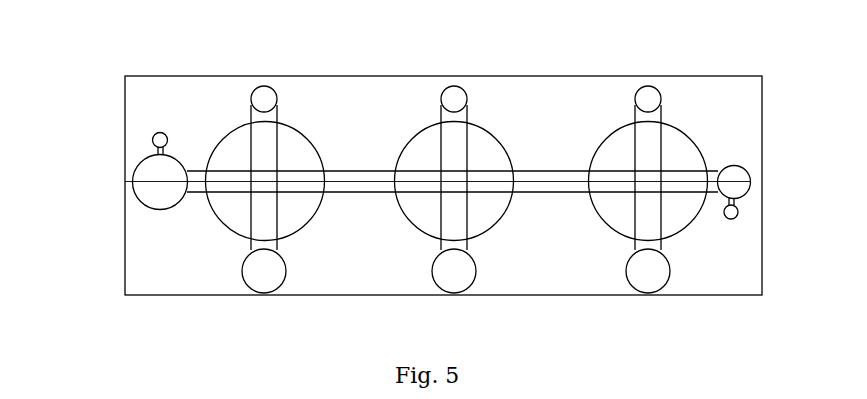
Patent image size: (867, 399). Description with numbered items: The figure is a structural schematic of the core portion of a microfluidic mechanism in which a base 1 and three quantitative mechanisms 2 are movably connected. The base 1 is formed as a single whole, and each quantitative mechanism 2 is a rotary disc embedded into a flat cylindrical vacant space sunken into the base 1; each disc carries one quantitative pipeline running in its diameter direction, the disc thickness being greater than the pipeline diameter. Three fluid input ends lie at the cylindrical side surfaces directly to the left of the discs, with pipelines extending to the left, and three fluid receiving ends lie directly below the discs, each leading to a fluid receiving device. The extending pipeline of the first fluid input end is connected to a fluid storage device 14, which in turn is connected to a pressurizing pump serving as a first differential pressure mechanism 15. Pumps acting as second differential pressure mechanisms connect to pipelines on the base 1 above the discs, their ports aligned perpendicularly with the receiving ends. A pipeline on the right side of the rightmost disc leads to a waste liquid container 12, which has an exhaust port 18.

The base 1 is at (742, 140).
The quantitative mechanism 2 is at (279, 143).
The waste liquid container 12 is at (735, 180).
The fluid storage device 14 is at (146, 183).
The first differential pressure mechanism 15 is at (158, 137).
The exhaust port 18 is at (740, 215).